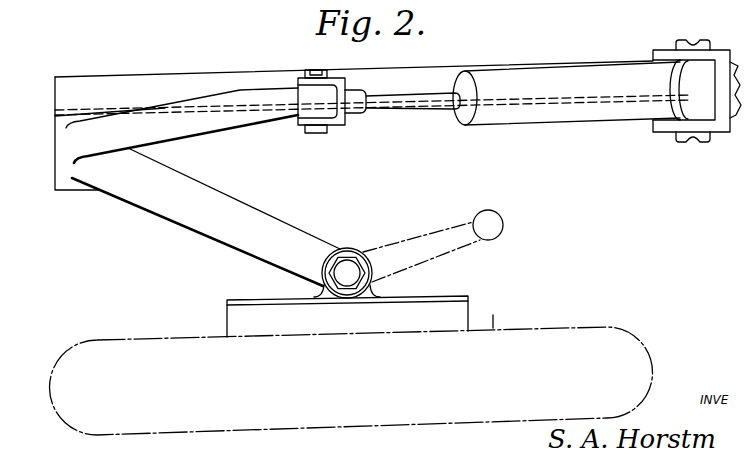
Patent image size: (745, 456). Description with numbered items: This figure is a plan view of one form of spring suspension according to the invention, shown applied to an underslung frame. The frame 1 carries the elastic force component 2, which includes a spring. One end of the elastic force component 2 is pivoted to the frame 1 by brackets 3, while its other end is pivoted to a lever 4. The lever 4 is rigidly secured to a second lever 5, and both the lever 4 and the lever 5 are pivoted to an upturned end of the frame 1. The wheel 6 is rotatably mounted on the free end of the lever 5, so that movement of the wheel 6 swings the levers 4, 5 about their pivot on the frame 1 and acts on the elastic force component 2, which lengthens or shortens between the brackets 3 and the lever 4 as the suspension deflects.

The frame 1 is at (170, 93).
The elastic force component 2 is at (525, 87).
The brackets 3 is at (667, 125).
The lever 4 is at (222, 118).
The lever 5 is at (215, 213).
The wheel 6 is at (528, 328).